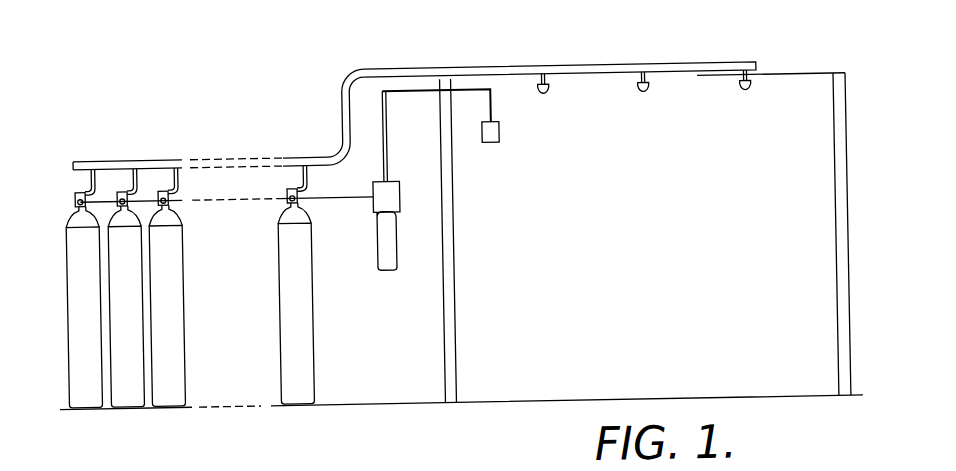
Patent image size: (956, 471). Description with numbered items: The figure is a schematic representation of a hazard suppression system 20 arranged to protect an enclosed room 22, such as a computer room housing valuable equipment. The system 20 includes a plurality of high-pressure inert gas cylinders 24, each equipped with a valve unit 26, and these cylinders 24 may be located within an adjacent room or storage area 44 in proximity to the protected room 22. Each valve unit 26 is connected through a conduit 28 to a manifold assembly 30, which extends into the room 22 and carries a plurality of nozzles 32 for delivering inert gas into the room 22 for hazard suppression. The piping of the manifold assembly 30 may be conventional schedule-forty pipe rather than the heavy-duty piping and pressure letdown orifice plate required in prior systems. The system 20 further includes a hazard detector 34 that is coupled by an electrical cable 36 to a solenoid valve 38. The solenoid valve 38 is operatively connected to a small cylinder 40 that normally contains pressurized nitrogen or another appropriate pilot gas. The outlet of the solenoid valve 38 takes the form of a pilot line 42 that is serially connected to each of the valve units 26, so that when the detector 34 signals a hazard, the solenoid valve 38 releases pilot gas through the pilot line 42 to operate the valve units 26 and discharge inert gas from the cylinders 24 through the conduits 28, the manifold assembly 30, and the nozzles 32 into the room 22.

The hazard suppression system 20 is at (795, 67).
The enclosed room 22 is at (458, 241).
The high-pressure inert gas cylinder 24 is at (310, 332).
The valve unit 26 is at (278, 180).
The conduit 28 is at (308, 177).
The manifold assembly 30 is at (606, 70).
The nozzle 32 is at (551, 94).
The hazard detector 34 is at (492, 143).
The electrical cable 36 is at (323, 100).
The solenoid valve 38 is at (396, 192).
The small cylinder 40 is at (387, 261).
The pilot line 42 is at (352, 198).
The adjacent room or storage area 44 is at (176, 283).